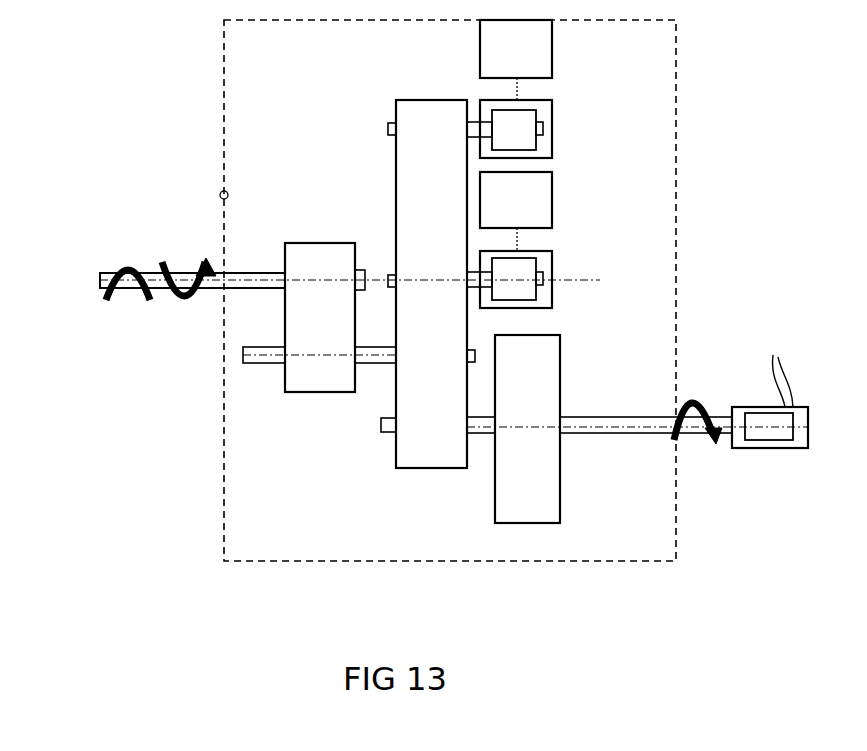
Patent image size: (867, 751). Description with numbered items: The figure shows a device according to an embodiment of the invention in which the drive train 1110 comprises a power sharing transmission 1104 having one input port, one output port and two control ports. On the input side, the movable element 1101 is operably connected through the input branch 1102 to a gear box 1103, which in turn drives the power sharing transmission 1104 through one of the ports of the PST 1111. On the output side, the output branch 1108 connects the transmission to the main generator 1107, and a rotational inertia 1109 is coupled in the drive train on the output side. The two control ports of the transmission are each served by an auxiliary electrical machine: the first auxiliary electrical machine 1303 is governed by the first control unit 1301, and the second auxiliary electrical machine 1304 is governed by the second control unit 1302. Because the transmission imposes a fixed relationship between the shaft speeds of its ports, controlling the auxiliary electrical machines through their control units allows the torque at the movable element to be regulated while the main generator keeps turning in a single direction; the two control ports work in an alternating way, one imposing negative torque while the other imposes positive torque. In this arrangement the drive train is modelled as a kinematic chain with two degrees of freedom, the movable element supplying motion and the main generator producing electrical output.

The movable element 1101 is at (90, 285).
The input branch 1102 is at (213, 285).
The gear box 1103 is at (283, 247).
The power sharing transmission 1104 is at (392, 174).
The main generator 1107 is at (741, 406).
The output branch 1108 is at (727, 440).
The rotational inertia 1109 is at (497, 427).
The drive train 1110 is at (448, 313).
The ports of the PST 1111 is at (390, 280).
The control unit 1 1301 is at (478, 45).
The control unit 2 1302 is at (557, 178).
The auxiliary electrical machine 1 1303 is at (552, 135).
The auxiliary electrical machine 2 1304 is at (552, 280).